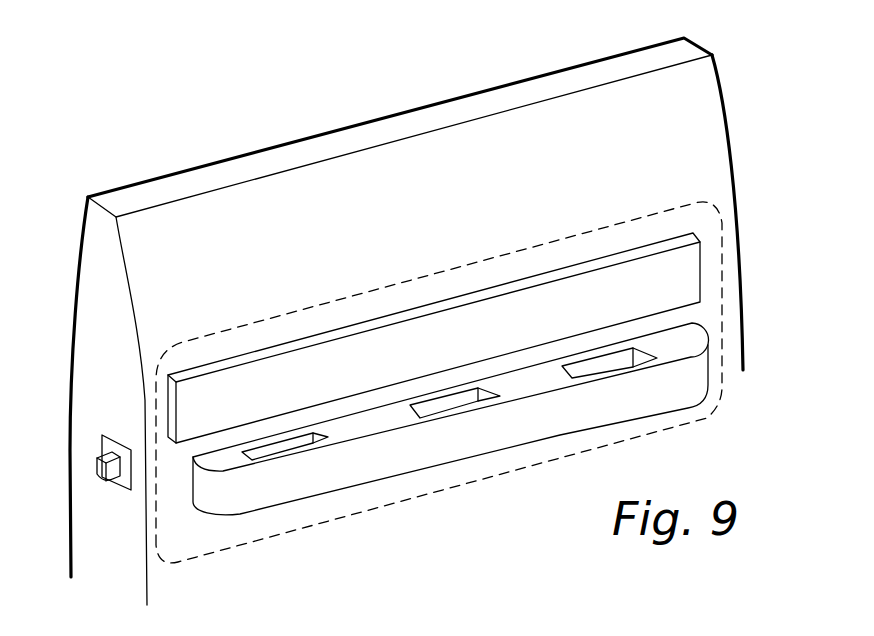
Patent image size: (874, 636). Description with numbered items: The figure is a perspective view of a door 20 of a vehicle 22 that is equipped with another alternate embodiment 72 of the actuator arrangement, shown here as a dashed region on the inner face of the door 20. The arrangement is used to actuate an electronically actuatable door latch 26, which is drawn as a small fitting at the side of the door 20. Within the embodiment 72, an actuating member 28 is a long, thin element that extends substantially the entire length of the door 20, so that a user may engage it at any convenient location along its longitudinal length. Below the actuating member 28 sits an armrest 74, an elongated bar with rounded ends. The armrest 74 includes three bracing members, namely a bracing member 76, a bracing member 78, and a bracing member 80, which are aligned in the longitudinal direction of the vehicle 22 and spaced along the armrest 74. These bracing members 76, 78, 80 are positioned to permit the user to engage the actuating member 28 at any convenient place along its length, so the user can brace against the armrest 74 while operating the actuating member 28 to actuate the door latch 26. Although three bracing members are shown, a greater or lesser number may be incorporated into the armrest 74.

The door 20 is at (387, 117).
The vehicle 22 is at (243, 128).
The electronically actuatable door latch 26 is at (97, 442).
The actuating member 28 is at (487, 312).
The alternate embodiment of the actuator arrangement 72 is at (355, 293).
The armrest 74 is at (588, 415).
The bracing member 76 is at (314, 438).
The bracing member 78 is at (482, 393).
The bracing member 80 is at (639, 354).